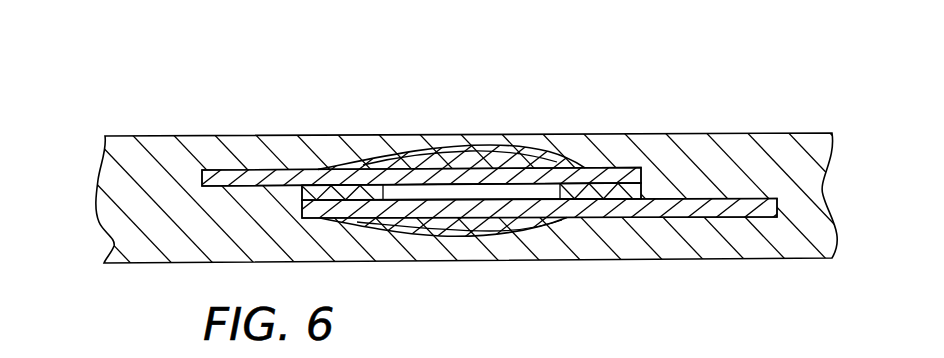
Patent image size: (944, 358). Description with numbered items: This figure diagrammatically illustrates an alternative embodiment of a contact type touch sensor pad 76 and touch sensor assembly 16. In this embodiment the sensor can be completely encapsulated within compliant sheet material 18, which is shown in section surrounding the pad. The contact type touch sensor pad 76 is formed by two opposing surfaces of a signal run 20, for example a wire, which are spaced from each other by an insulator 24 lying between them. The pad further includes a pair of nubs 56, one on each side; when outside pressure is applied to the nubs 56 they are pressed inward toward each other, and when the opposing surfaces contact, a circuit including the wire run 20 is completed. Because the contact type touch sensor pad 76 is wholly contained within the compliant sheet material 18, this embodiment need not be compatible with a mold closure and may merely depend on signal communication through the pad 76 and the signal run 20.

The touch sensor assembly 16 is at (112, 114).
The compliant sheet material 18 is at (787, 145).
The signal run 20 is at (200, 170).
The insulator 24 is at (305, 170).
The nubs 56 is at (466, 146).
The contact type touch sensor pad 76 is at (508, 133).